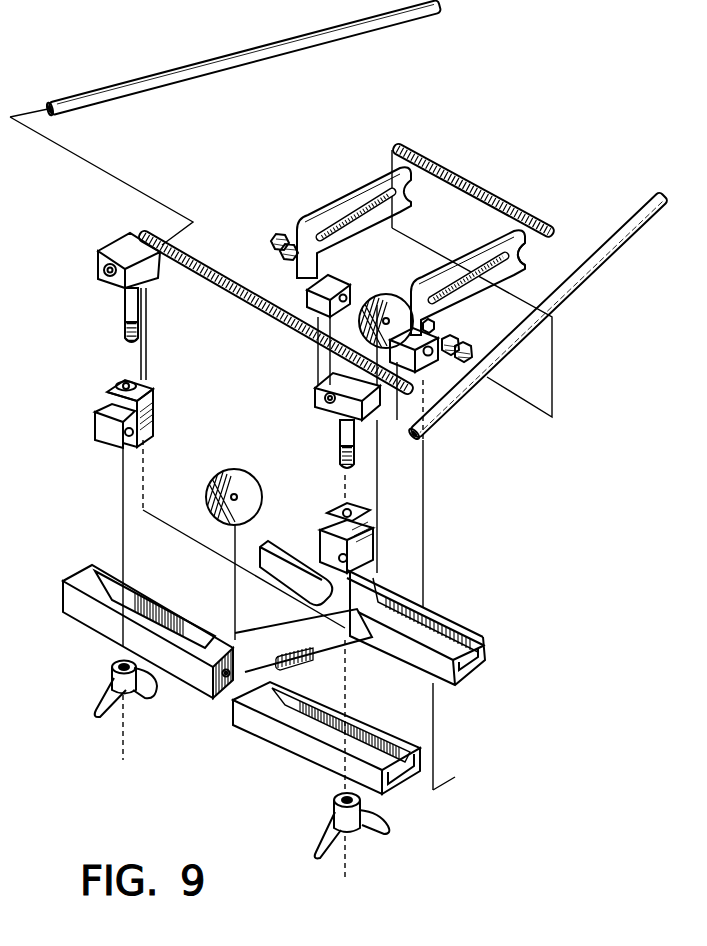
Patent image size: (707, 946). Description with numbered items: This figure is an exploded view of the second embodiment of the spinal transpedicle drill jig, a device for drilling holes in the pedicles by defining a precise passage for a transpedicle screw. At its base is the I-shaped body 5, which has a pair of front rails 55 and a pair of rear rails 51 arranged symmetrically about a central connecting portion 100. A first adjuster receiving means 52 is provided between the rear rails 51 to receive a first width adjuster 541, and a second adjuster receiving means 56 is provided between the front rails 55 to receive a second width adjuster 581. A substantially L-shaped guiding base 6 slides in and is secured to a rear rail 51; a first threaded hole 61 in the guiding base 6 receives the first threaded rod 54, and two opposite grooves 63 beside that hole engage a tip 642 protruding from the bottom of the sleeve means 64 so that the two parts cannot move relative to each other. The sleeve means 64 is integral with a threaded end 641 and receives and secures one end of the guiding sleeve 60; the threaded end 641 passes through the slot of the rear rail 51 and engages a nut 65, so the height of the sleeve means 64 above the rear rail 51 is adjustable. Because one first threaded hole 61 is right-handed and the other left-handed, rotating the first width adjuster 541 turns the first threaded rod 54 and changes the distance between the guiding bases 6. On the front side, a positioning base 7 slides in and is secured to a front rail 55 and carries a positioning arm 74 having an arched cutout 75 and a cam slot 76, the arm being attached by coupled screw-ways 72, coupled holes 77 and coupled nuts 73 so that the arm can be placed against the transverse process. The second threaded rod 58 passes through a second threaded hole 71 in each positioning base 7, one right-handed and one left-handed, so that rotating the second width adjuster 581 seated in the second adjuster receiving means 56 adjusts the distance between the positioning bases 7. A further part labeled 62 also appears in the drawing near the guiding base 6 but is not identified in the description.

The guiding sleeve 60 is at (201, 62).
The second threaded rod 58 is at (457, 176).
The first threaded rod 54 is at (233, 297).
The sleeve means 64 is at (118, 248).
The tip 642 is at (108, 288).
The threaded end 641 is at (140, 310).
The slide post 62 is at (114, 378).
The grooves 63 is at (115, 391).
The first threaded hole 61 is at (139, 434).
The guiding base 6 is at (100, 425).
The positioning arm 74 is at (350, 197).
The coupled nuts 73 is at (276, 236).
The positioning base 7 is at (330, 282).
The second threaded hole 71 is at (347, 300).
The second width adjuster 581 is at (393, 296).
The arched cutout 75 is at (520, 250).
The cam slot 76 is at (512, 272).
The coupled holes 77 is at (435, 325).
The coupled screw-ways 72 is at (424, 364).
The first width adjuster 541 is at (245, 469).
The I-shaped body 5 is at (168, 600).
The rear rail 51 is at (290, 730).
The first adjuster receiving means 52 is at (225, 700).
The front rail 55 is at (407, 642).
The second adjuster receiving means 56 is at (385, 580).
The central connecting portion 100 is at (288, 622).
The nut 65 is at (100, 708).